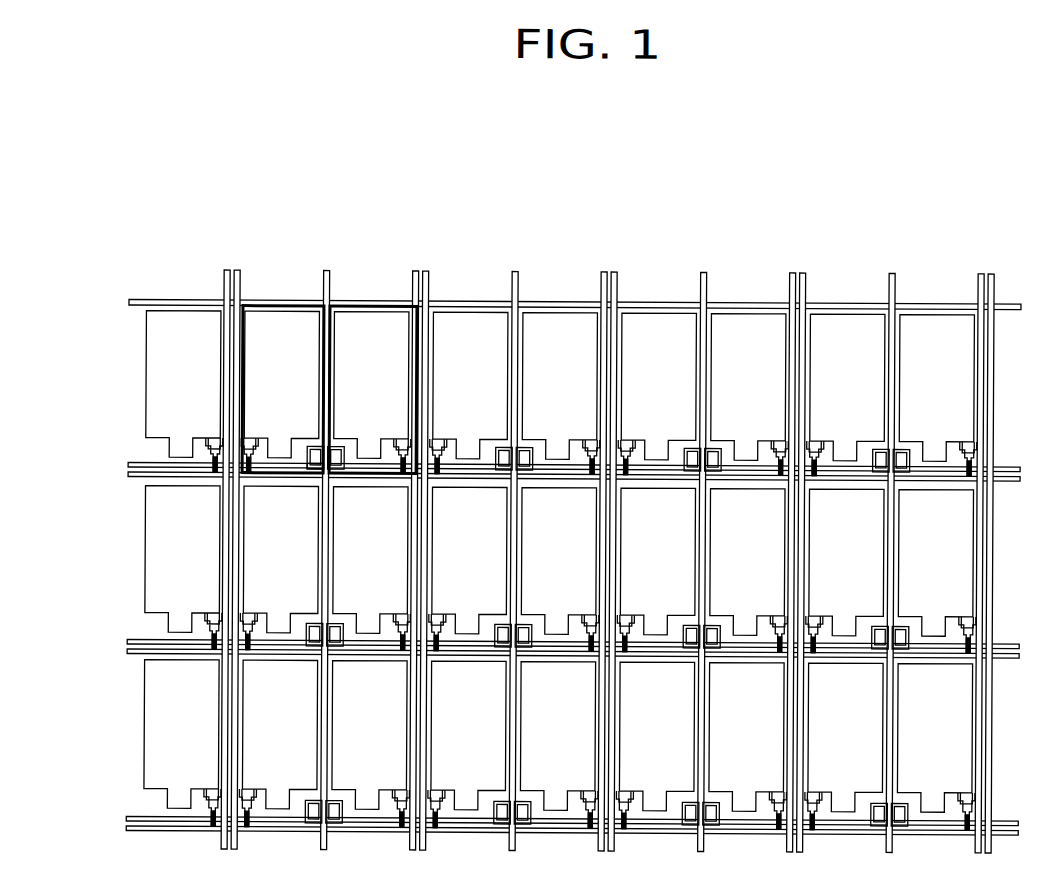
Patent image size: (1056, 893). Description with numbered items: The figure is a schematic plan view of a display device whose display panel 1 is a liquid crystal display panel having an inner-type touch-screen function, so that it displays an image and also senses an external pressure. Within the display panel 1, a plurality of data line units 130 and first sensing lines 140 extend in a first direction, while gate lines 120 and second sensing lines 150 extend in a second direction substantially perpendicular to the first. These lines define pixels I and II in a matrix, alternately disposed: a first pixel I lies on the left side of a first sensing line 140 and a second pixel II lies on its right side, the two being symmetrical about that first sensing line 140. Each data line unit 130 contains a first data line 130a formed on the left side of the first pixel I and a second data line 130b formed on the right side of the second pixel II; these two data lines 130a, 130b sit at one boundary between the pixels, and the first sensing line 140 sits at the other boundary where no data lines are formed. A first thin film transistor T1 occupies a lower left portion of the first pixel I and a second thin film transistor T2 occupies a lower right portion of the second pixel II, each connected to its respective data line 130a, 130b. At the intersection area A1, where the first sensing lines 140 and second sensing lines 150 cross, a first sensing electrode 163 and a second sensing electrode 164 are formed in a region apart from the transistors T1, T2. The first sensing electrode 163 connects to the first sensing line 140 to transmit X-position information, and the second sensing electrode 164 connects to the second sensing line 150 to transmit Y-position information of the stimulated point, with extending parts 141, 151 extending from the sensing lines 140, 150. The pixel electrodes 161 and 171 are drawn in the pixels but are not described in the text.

The display panel 1 is at (806, 150).
The gate line 120 is at (129, 476).
The data line unit 130 is at (272, 197).
The first data line 130a is at (238, 269).
The second data line 130b is at (227, 269).
The first sensing line 140 is at (327, 269).
The second sensing line 150 is at (129, 463).
The first pixel electrode 161 is at (258, 332).
The second pixel electrode 171 is at (390, 327).
The extending part 141 is at (316, 458).
The extending part 151 is at (340, 453).
The first sensing electrode 163 is at (306, 467).
The second sensing electrode 164 is at (351, 456).
The first thin film transistor T1 is at (233, 470).
The second thin film transistor T2 is at (409, 460).
The intersection area A1 is at (311, 433).
The first pixel I is at (290, 305).
The second pixel II is at (370, 305).